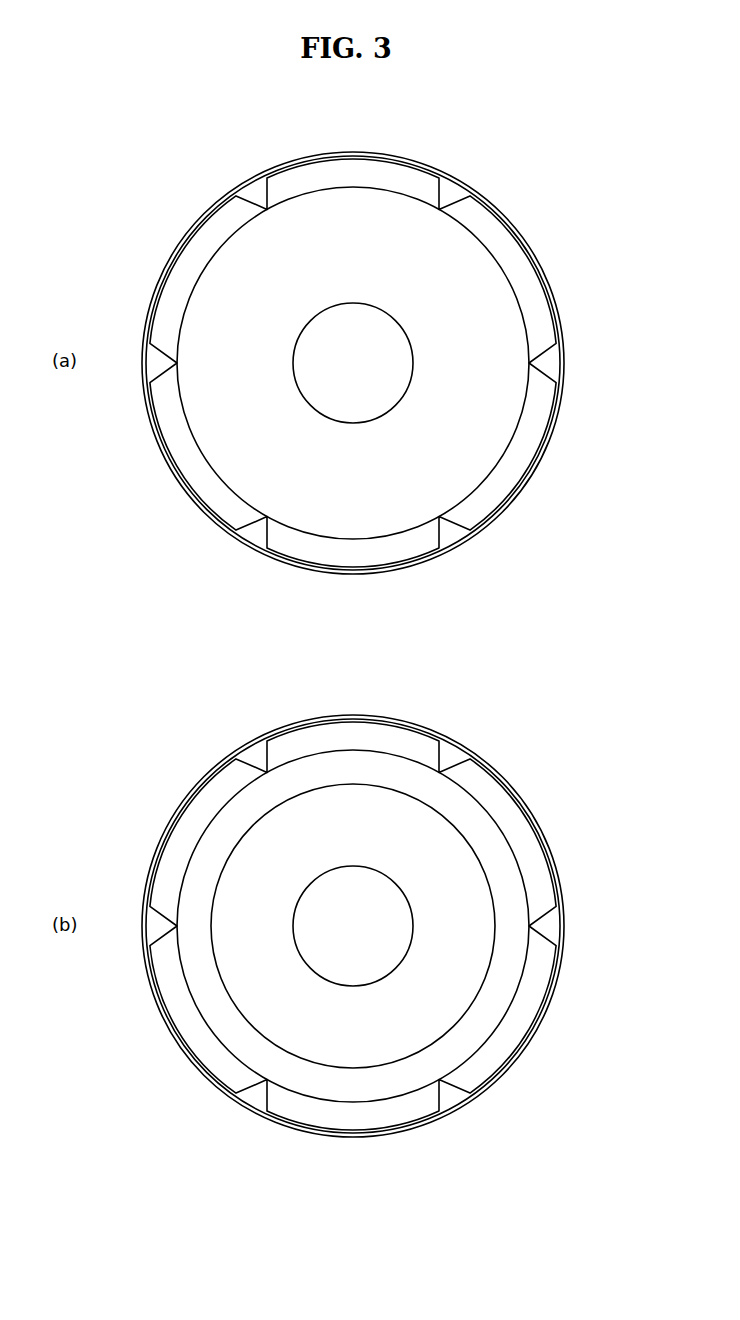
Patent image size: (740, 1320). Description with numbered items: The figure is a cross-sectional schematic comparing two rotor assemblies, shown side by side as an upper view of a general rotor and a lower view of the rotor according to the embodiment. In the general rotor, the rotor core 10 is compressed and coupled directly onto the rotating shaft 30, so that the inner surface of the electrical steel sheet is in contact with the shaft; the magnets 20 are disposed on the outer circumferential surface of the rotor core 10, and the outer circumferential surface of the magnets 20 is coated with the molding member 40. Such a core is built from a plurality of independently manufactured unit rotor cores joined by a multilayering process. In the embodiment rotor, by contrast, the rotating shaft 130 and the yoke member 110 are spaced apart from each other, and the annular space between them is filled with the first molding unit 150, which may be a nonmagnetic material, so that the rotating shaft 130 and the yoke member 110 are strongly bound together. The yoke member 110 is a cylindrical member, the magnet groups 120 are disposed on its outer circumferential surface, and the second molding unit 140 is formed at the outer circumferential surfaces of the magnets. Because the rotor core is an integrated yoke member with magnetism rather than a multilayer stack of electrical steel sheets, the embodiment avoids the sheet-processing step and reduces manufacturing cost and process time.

The rotor core 10 is at (503, 333).
The magnets 20 is at (543, 412).
The rotating shaft 30 is at (365, 383).
The molding member 40 is at (547, 276).
The yoke member 110 is at (503, 897).
The magnet groups 120 is at (540, 973).
The rotating shaft 130 is at (365, 947).
The second molding unit 140 is at (547, 838).
The first molding unit 150 is at (455, 977).